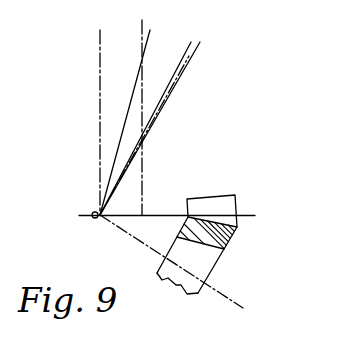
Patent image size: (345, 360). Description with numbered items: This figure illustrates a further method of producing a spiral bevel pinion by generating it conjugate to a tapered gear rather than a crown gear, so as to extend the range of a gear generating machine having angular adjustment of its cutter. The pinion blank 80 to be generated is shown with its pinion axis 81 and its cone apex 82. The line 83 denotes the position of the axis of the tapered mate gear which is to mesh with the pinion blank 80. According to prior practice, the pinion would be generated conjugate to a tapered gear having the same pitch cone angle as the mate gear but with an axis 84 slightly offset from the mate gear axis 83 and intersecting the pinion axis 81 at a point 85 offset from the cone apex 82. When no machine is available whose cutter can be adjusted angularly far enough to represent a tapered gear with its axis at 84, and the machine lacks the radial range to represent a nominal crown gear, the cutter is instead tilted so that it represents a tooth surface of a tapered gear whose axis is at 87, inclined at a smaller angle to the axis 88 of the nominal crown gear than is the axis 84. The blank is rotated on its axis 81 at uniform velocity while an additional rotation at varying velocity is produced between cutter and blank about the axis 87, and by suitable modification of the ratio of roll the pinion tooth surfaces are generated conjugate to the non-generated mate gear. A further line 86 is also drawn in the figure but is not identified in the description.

The pinion blank 80 is at (233, 237).
The pinion axis 81 is at (231, 299).
The cone apex 82 is at (94, 218).
The axis of the tapered gear 83 is at (186, 57).
The offset axis of tapered generating gear 84 is at (153, 125).
The intersection point 85 is at (96, 219).
The vertical reference axis 86 is at (143, 88).
The axis of tilted-cutter tapered gear 87 is at (135, 95).
The axis of the nominal crown gear 88 is at (100, 90).